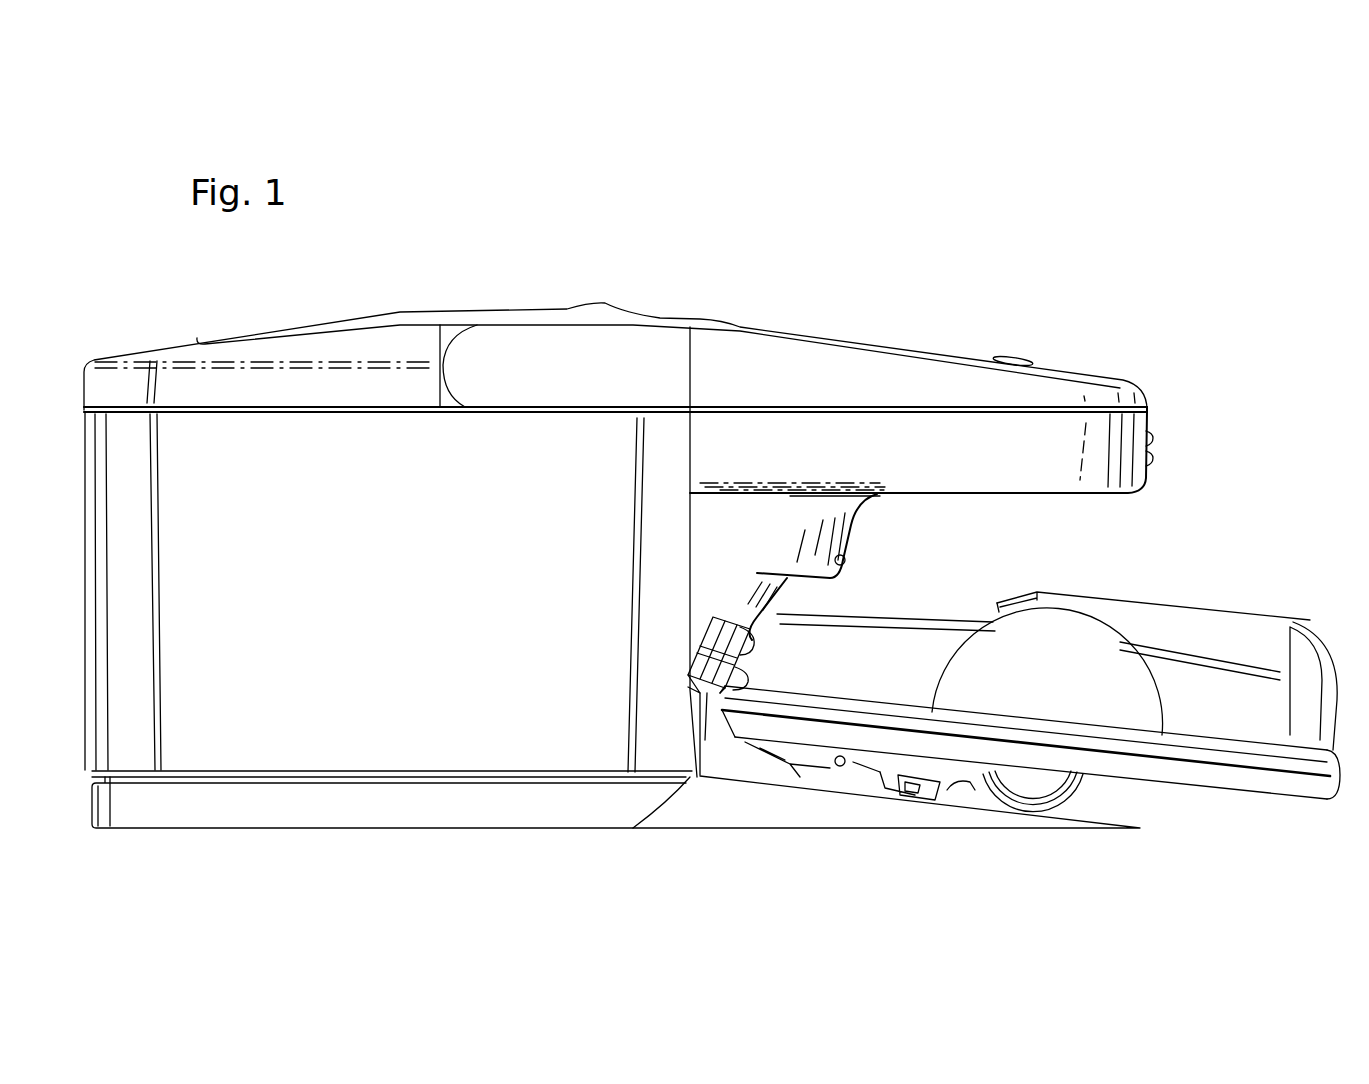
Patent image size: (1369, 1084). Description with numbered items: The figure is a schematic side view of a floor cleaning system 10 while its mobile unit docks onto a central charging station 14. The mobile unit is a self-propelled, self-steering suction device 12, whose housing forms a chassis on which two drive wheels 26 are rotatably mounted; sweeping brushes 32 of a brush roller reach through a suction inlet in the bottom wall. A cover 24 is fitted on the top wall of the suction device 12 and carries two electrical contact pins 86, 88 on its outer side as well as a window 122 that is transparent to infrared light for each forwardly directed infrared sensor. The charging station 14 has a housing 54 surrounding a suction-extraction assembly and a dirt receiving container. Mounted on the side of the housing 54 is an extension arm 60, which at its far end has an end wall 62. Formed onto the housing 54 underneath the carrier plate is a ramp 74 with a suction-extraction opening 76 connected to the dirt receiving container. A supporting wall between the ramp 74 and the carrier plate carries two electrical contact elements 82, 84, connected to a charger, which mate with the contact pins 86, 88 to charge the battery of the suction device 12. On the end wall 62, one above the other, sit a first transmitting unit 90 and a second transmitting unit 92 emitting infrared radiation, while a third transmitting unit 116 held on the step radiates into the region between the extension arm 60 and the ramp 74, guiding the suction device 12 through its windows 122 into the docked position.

The floor cleaning system 10 is at (1182, 308).
The suction device 12 is at (1265, 600).
The charging station 14 is at (226, 325).
The cover 24 is at (1170, 648).
The drive wheels 26 is at (1037, 790).
The sweeping brushes 32 is at (837, 780).
The housing 54 is at (232, 743).
The extension arm 60 is at (966, 352).
The end wall 62 is at (1150, 412).
The ramp 74 is at (952, 786).
The suction-extraction opening 76 is at (890, 787).
The electrical contact element 82 is at (730, 642).
The electrical contact element 84 is at (718, 672).
The electrical contact pin 86 is at (745, 652).
The electrical contact pin 88 is at (737, 689).
The first transmitting unit 90 is at (1160, 438).
The second transmitting unit 92 is at (1160, 460).
The third transmitting unit 116 is at (862, 559).
The window 122 is at (997, 603).